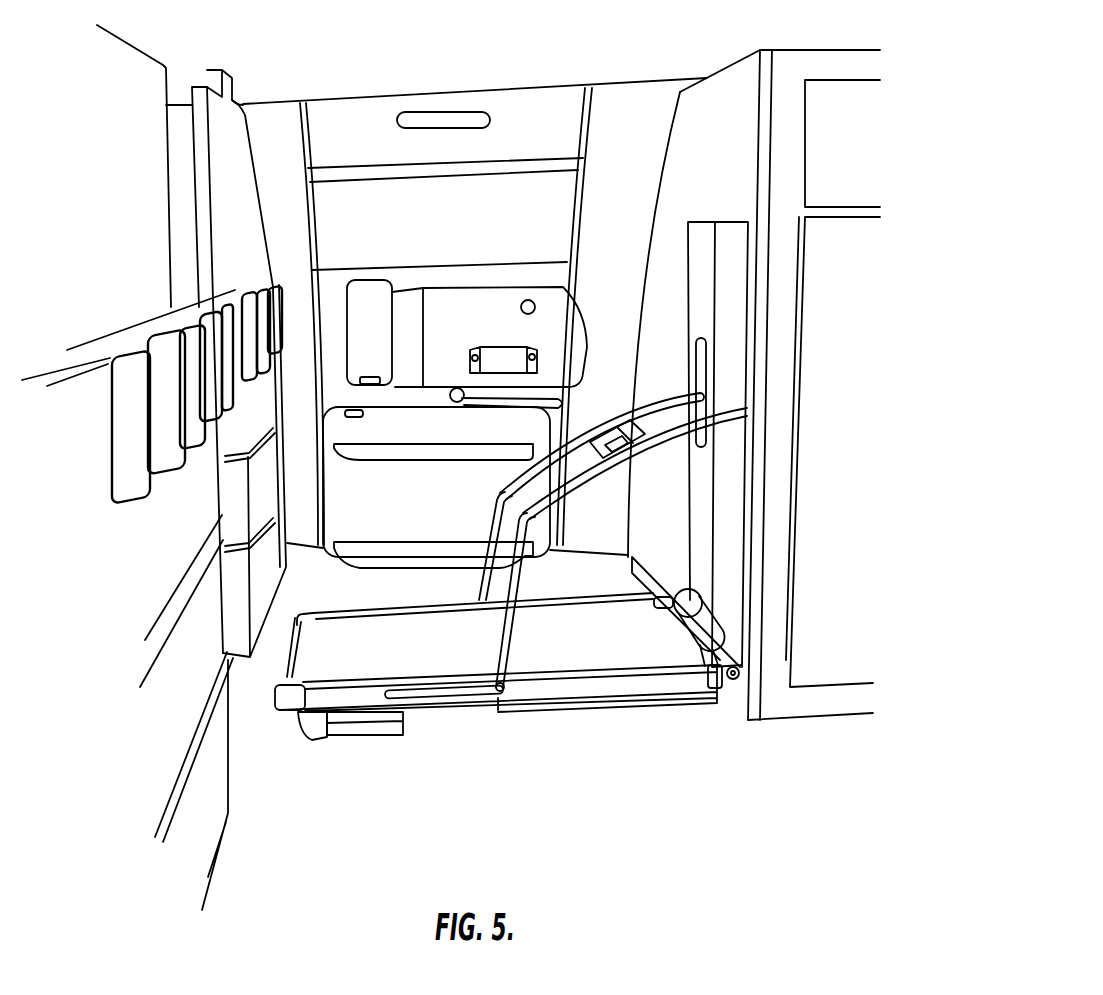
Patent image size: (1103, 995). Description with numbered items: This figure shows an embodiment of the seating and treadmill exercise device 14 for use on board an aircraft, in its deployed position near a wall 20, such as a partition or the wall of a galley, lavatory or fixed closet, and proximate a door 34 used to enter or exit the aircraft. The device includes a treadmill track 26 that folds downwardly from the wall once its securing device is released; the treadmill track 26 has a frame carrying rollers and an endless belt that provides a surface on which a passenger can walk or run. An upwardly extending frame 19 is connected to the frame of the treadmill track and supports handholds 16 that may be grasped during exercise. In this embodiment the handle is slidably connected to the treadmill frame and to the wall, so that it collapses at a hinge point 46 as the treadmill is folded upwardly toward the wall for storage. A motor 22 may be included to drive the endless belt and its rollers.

The seating and treadmill exercise device 14 is at (392, 752).
The handholds 16 is at (572, 483).
The upwardly extending frame 19 is at (508, 638).
The wall 20 is at (713, 103).
The motor 22 is at (702, 617).
The treadmill track 26 is at (395, 650).
The door 34 is at (413, 213).
The hinge point 46 is at (503, 493).